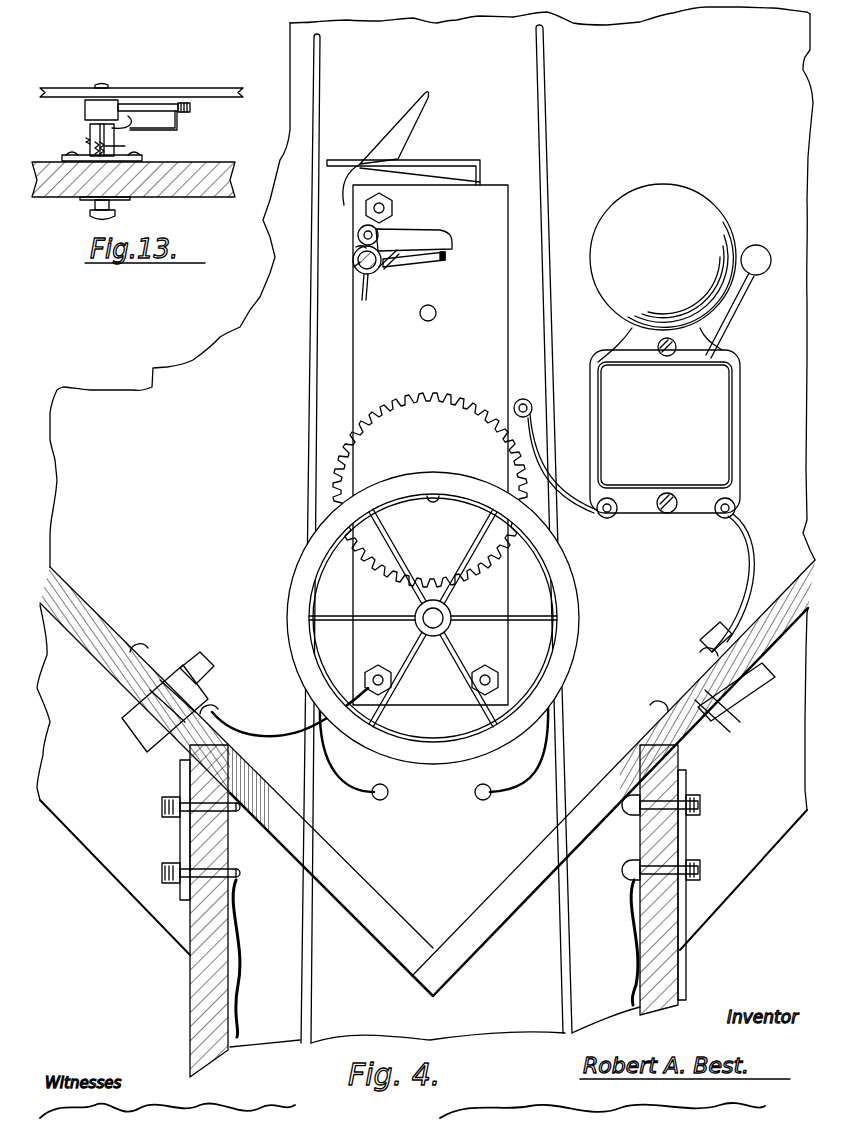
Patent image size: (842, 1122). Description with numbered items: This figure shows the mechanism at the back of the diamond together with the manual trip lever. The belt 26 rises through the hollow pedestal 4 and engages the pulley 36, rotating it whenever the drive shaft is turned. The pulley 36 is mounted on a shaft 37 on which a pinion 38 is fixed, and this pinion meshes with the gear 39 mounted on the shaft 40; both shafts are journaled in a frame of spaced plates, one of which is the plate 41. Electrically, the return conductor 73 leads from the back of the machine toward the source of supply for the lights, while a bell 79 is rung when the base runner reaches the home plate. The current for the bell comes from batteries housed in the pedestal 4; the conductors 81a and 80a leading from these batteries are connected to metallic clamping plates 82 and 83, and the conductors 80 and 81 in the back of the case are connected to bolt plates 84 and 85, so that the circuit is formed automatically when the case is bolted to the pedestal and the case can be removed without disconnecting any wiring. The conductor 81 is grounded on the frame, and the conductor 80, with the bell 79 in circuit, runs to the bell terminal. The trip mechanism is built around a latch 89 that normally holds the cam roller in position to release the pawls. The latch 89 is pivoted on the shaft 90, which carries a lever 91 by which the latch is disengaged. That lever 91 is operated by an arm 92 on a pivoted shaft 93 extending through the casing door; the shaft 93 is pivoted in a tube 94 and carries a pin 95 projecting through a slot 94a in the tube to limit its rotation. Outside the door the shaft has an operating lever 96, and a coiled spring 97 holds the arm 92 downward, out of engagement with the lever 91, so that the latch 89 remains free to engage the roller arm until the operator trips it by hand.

In FIG. 4, the hollow pedestal 4 is at (196, 1003).
In FIG. 4, the belt 26 is at (312, 806).
In FIG. 4, the pulley 36 is at (314, 548).
In FIG. 4, the shaft 37 is at (422, 620).
In FIG. 4, the pinion 38 is at (412, 608).
In FIG. 4, the gear 39 is at (430, 490).
In FIG. 4, the shaft 40 is at (432, 500).
In FIG. 4, the frame plate 41 is at (441, 325).
In FIG. 4, the return conductor 73 is at (545, 160).
In FIG. 4, the bell 79 is at (703, 220).
In FIG. 4, the conductor 80 is at (552, 470).
In FIG. 4, the conductor 80a is at (630, 976).
In FIG. 4, the conductor 81 is at (252, 730).
In FIG. 4, the conductor 81a is at (241, 966).
In FIG. 4, the metallic clamping plate 82 is at (686, 826).
In FIG. 4, the metallic clamping plate 83 is at (180, 843).
In FIG. 4, the bolt plate 84 is at (668, 696).
In FIG. 4, the bolt plate 85 is at (178, 672).
In FIG. 4, the latch 89 is at (397, 152).
In FIG. 4, the shaft 90 is at (378, 232).
In FIG. 13, the shaft 90 is at (95, 86).
In FIG. 4, the lever 91 is at (420, 235).
In FIG. 13, the lever 91 is at (145, 104).
In FIG. 4, the arm 92 is at (412, 264).
In FIG. 13, the arm 92 is at (168, 135).
In FIG. 4, the pivoted shaft 93 is at (352, 262).
In FIG. 4, the tube 94 is at (365, 282).
In FIG. 13, the tube 94 is at (103, 162).
In FIG. 4, the slot 94a is at (358, 252).
In FIG. 13, the slot 94a is at (90, 130).
In FIG. 4, the pin 95 is at (356, 270).
In FIG. 13, the pin 95 is at (115, 148).
In FIG. 13, the operating lever 96 is at (95, 210).
In FIG. 4, the coiled spring 97 is at (376, 270).
In FIG. 13, the coiled spring 97 is at (86, 140).